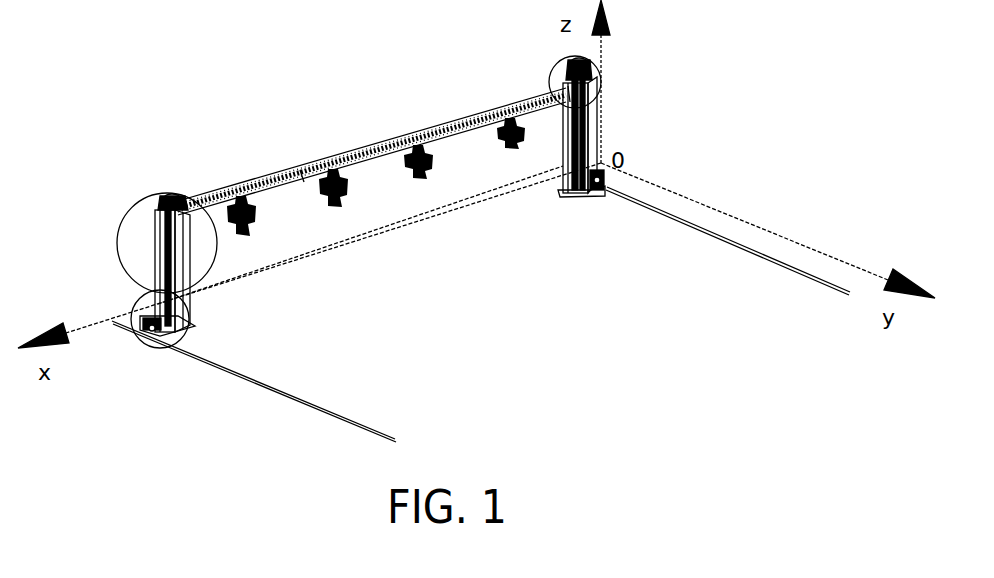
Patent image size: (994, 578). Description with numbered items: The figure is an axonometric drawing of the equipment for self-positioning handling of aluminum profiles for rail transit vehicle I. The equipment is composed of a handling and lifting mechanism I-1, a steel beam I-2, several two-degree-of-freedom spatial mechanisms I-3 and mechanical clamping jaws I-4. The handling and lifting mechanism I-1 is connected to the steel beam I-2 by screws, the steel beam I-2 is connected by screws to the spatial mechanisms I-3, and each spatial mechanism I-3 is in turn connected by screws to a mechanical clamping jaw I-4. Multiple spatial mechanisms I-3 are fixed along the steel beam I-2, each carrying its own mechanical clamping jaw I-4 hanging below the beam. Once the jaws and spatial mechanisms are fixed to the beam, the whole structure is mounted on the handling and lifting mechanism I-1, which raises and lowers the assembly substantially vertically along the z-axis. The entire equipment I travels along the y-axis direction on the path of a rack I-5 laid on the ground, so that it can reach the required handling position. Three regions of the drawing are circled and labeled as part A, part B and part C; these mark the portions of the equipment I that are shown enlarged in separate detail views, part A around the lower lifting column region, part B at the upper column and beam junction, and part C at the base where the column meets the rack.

The handling and lifting mechanism I-1 is at (132, 200).
The steel beam I-2 is at (372, 140).
The 2-DOF spatial mechanism I-3 is at (435, 123).
The mechanical clamping jaw I-4 is at (376, 150).
The rack I-5 is at (481, 253).
The equipment for self-positioning handling of aluminum profiles for rail transit ve I is at (597, 127).
The part A is at (133, 226).
The part B is at (598, 71).
The part C is at (185, 317).